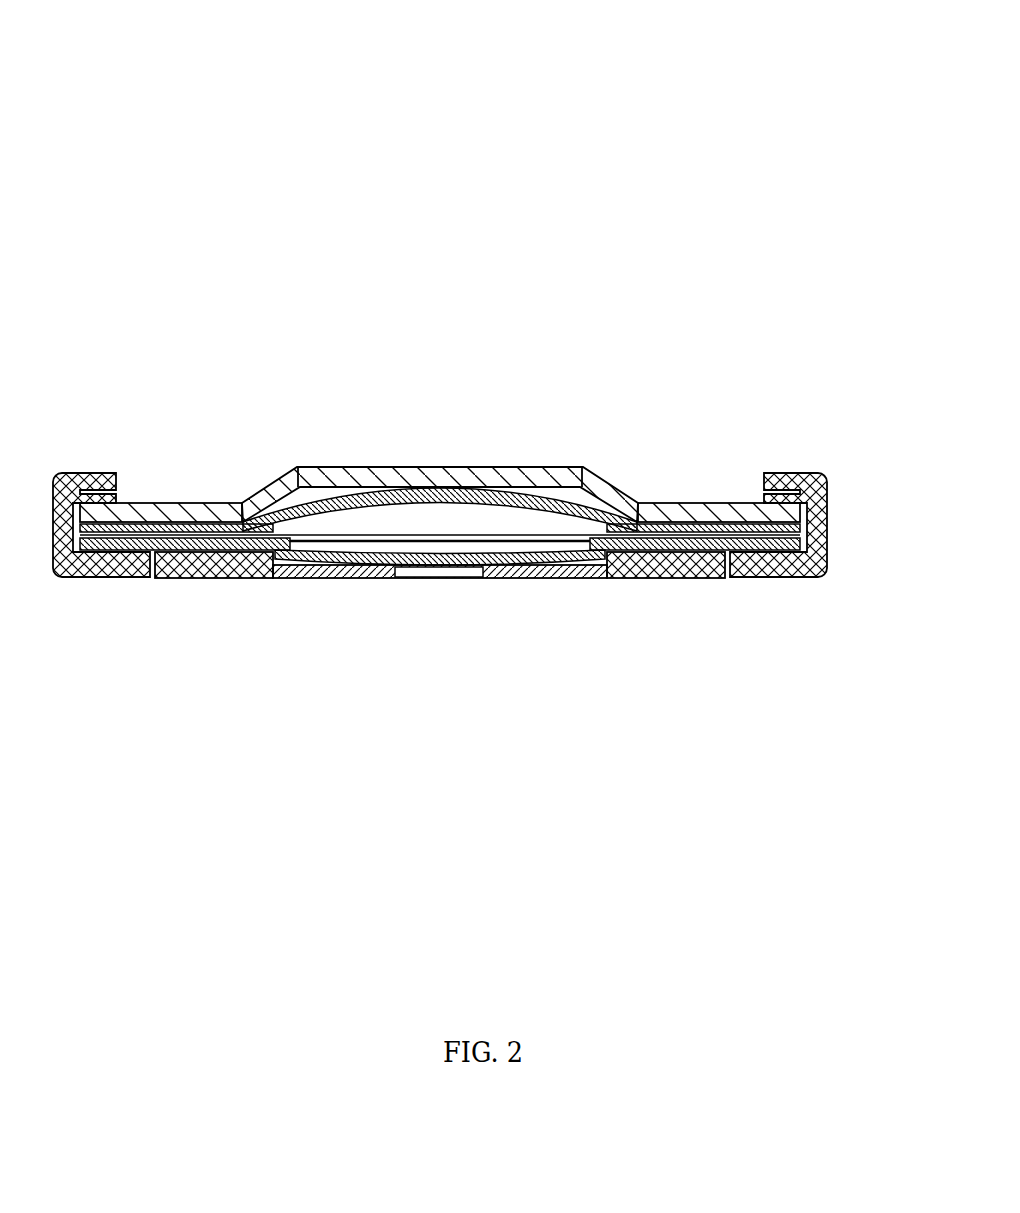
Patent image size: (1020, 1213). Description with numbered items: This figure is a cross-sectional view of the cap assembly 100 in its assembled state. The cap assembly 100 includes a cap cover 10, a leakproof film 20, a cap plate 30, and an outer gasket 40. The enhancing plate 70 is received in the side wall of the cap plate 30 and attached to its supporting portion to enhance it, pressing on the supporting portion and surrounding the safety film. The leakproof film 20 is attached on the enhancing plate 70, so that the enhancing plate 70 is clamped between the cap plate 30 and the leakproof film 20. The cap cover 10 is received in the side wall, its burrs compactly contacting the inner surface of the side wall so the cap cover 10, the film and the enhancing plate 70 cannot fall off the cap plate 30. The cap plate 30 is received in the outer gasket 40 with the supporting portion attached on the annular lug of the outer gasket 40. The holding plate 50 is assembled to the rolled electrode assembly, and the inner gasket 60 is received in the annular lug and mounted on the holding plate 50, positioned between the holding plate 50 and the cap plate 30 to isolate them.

The cap assembly 100 is at (403, 52).
The cap cover 10 is at (467, 477).
The leakproof film 20 is at (288, 513).
The cap plate 30 is at (157, 578).
The outer gasket 40 is at (800, 553).
The holding plate 50 is at (542, 577).
The inner gasket 60 is at (673, 577).
The enhancing plate 70 is at (327, 538).